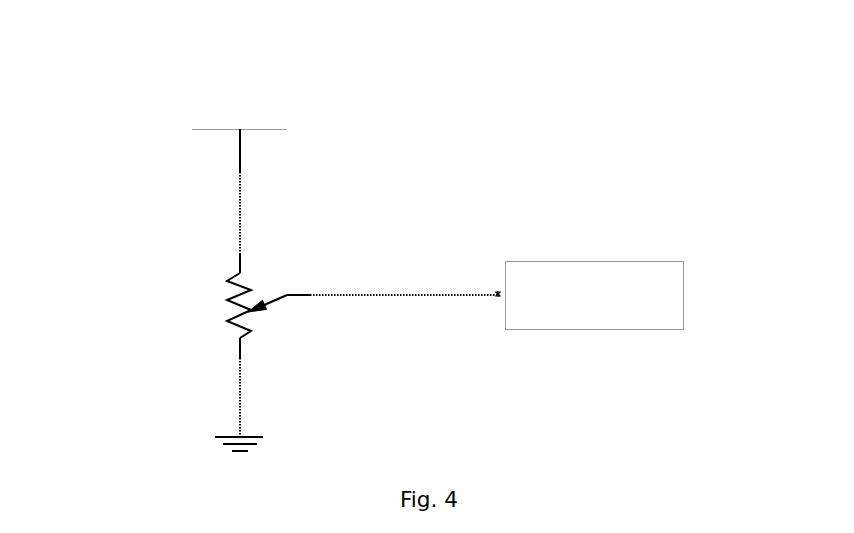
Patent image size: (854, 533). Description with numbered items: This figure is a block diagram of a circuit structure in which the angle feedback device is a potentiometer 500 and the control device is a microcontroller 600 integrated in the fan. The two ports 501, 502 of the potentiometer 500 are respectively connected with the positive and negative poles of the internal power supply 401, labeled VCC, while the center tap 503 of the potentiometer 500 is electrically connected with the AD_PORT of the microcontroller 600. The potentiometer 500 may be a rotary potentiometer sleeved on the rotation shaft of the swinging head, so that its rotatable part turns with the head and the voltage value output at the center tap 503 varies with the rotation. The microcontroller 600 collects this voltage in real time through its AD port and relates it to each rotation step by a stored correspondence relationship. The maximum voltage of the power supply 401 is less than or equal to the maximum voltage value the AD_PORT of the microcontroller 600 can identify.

The internal power supply 401 is at (313, 81).
The potentiometer 500 is at (259, 290).
The port of the potentiometer 501 is at (313, 219).
The port of the potentiometer 502 is at (311, 380).
The center tap 503 is at (374, 303).
The microcontroller 600 is at (667, 277).